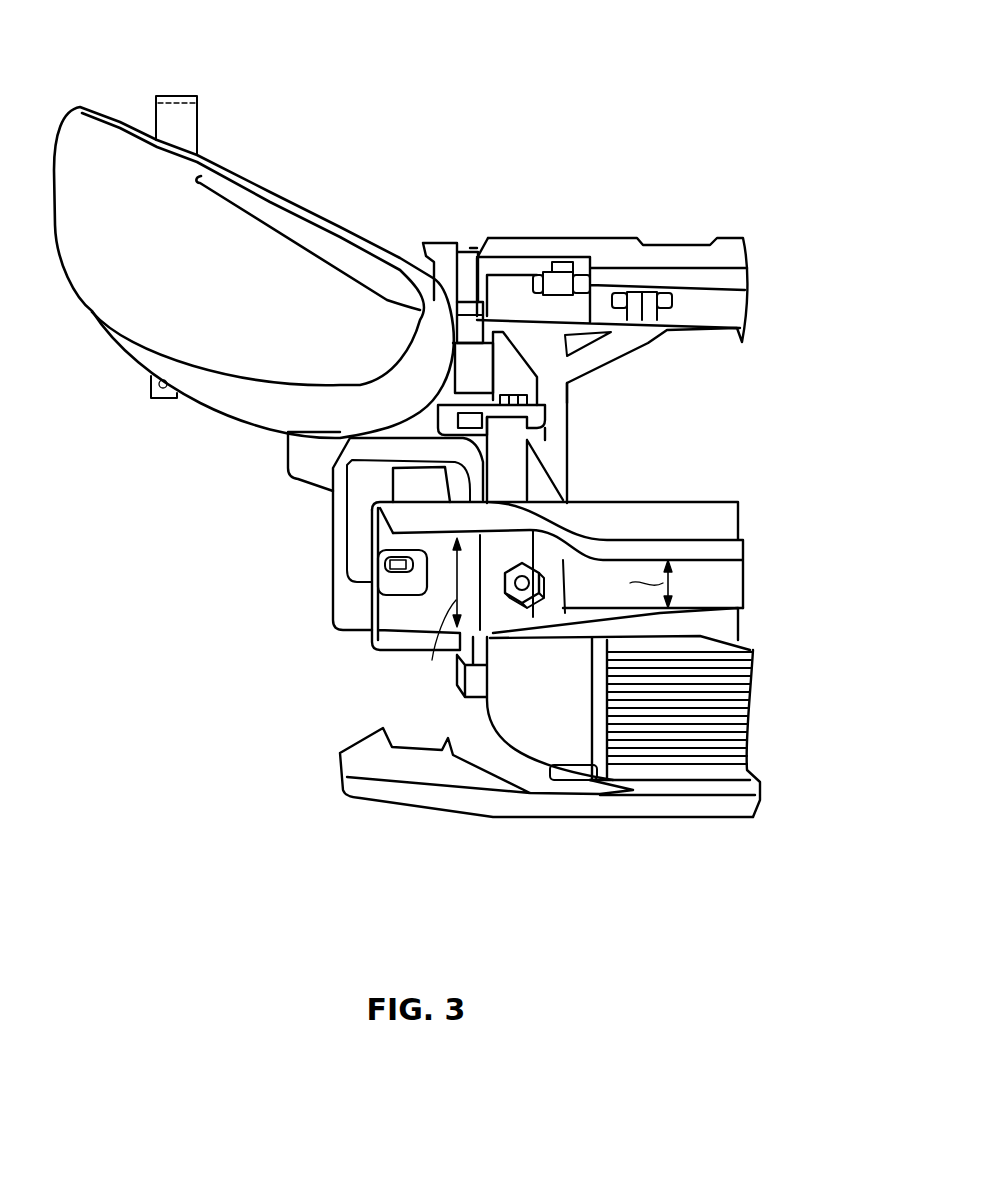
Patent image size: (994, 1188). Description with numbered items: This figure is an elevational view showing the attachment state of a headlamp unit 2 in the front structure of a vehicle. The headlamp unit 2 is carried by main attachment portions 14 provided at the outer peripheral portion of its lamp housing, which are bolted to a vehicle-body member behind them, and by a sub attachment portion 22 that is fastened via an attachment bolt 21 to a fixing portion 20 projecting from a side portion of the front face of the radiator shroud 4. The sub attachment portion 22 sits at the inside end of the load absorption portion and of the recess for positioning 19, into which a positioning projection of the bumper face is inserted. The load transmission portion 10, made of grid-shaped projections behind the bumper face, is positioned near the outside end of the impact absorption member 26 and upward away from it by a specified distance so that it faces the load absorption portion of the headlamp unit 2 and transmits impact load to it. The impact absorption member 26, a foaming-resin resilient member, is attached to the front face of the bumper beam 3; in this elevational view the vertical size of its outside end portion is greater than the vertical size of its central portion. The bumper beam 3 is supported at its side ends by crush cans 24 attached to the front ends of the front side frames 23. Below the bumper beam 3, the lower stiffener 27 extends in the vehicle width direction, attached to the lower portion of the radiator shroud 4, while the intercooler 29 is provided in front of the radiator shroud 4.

The headlamp unit 2 is at (308, 200).
The bumper beam 3 is at (692, 510).
The radiator shroud 4 is at (737, 232).
The load transmission portion 10 is at (462, 370).
The main attachment portion 14 is at (173, 96).
The recess for positioning 19 is at (458, 415).
The fixing portion 20 is at (527, 437).
The attachment bolt 21 is at (515, 382).
The sub attachment portion 22 is at (540, 405).
The front side frame 23 is at (352, 440).
The crush can 24 is at (413, 478).
The impact absorption member 26 is at (715, 588).
The lower stiffener 27 is at (418, 798).
The intercooler 29 is at (678, 765).